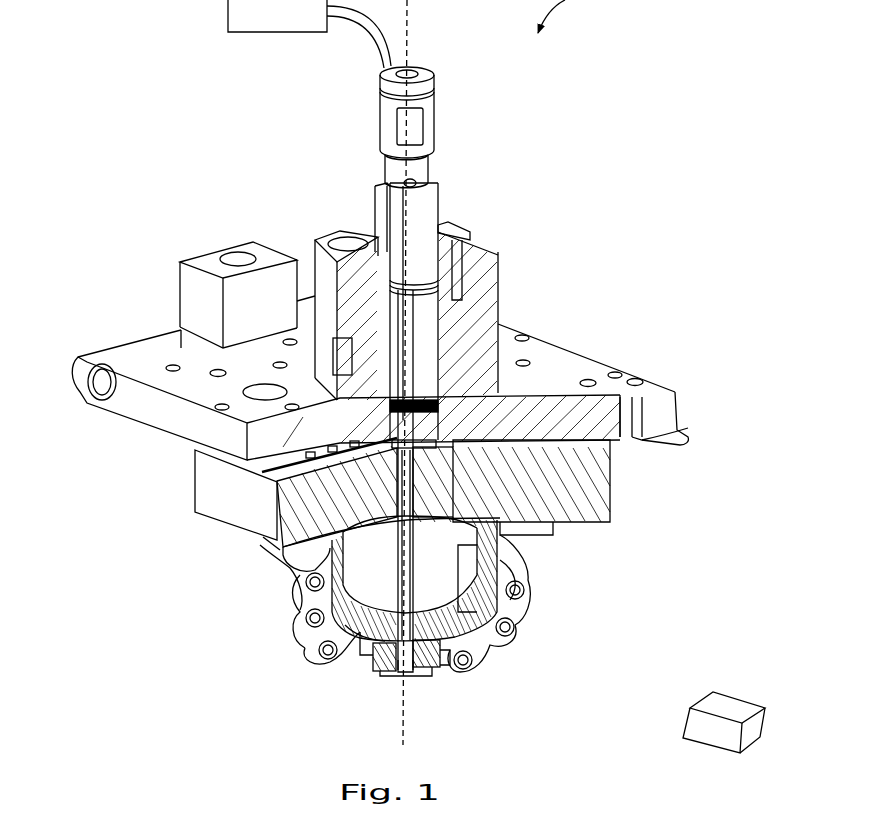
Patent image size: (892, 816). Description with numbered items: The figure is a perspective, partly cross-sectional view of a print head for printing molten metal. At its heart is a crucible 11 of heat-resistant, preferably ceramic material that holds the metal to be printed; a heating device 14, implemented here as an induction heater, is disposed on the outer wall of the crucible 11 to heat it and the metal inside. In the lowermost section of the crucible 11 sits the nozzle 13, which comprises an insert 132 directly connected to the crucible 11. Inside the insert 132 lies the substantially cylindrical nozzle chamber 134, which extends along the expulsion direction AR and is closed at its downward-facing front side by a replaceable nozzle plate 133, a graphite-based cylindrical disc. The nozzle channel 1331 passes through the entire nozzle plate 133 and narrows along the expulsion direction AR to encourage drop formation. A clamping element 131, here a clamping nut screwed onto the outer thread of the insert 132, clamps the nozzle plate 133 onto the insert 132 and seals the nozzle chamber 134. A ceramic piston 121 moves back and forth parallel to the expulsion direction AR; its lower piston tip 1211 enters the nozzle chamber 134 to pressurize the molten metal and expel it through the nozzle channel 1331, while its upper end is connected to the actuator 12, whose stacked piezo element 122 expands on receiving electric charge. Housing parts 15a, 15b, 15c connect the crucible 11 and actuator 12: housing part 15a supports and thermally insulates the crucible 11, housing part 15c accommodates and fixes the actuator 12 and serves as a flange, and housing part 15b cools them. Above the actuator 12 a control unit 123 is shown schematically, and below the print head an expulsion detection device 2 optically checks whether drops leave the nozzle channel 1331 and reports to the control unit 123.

The expulsion detection device 2 is at (730, 705).
The crucible 11 is at (517, 535).
The actuator 12 is at (393, 195).
The piston 121 is at (283, 568).
The piston tip 1211 is at (477, 640).
The piezo element 122 is at (412, 345).
The control unit 123 is at (245, 8).
The nozzle 13 is at (413, 672).
The clamping element 131 is at (367, 655).
The insert 132 is at (305, 643).
The nozzle plate 133 is at (383, 673).
The nozzle channel 1331 is at (410, 673).
The nozzle chamber 134 is at (425, 678).
The heating device 14 is at (293, 575).
The housing part 15a is at (615, 513).
The housing part 15b is at (615, 473).
The housing part 15c is at (660, 415).
The expulsion direction AR is at (397, 730).